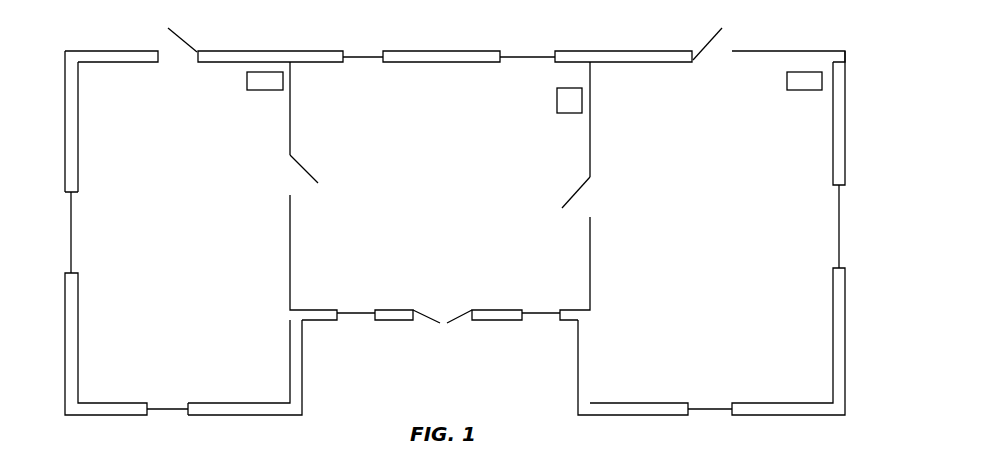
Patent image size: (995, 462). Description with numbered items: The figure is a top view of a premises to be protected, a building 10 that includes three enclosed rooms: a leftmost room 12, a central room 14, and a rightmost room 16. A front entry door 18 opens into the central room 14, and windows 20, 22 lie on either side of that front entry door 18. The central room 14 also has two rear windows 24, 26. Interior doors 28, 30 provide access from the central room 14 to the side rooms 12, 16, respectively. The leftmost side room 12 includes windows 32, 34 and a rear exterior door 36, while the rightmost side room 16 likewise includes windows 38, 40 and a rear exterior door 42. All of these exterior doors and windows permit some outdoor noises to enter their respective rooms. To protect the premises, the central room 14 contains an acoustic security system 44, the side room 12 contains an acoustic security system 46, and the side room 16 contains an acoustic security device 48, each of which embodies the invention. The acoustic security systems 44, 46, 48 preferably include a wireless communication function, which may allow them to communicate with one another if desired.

The building 10 is at (445, 42).
The leftmost room 12 is at (159, 239).
The central room 14 is at (427, 223).
The rightmost room 16 is at (704, 244).
The front entry door 18 is at (442, 336).
The window 20 is at (357, 314).
The window 22 is at (540, 314).
The rear window 24 is at (366, 55).
The rear window 26 is at (530, 55).
The interior door 28 is at (305, 168).
The interior door 30 is at (565, 196).
The window 32 is at (172, 412).
The window 34 is at (62, 232).
The rear exterior door 36 is at (183, 38).
The window 38 is at (703, 411).
The window 40 is at (843, 230).
The rear exterior door 42 is at (703, 44).
The acoustic security system 44 is at (567, 114).
The acoustic security system 46 is at (265, 92).
The acoustic security device 48 is at (802, 92).